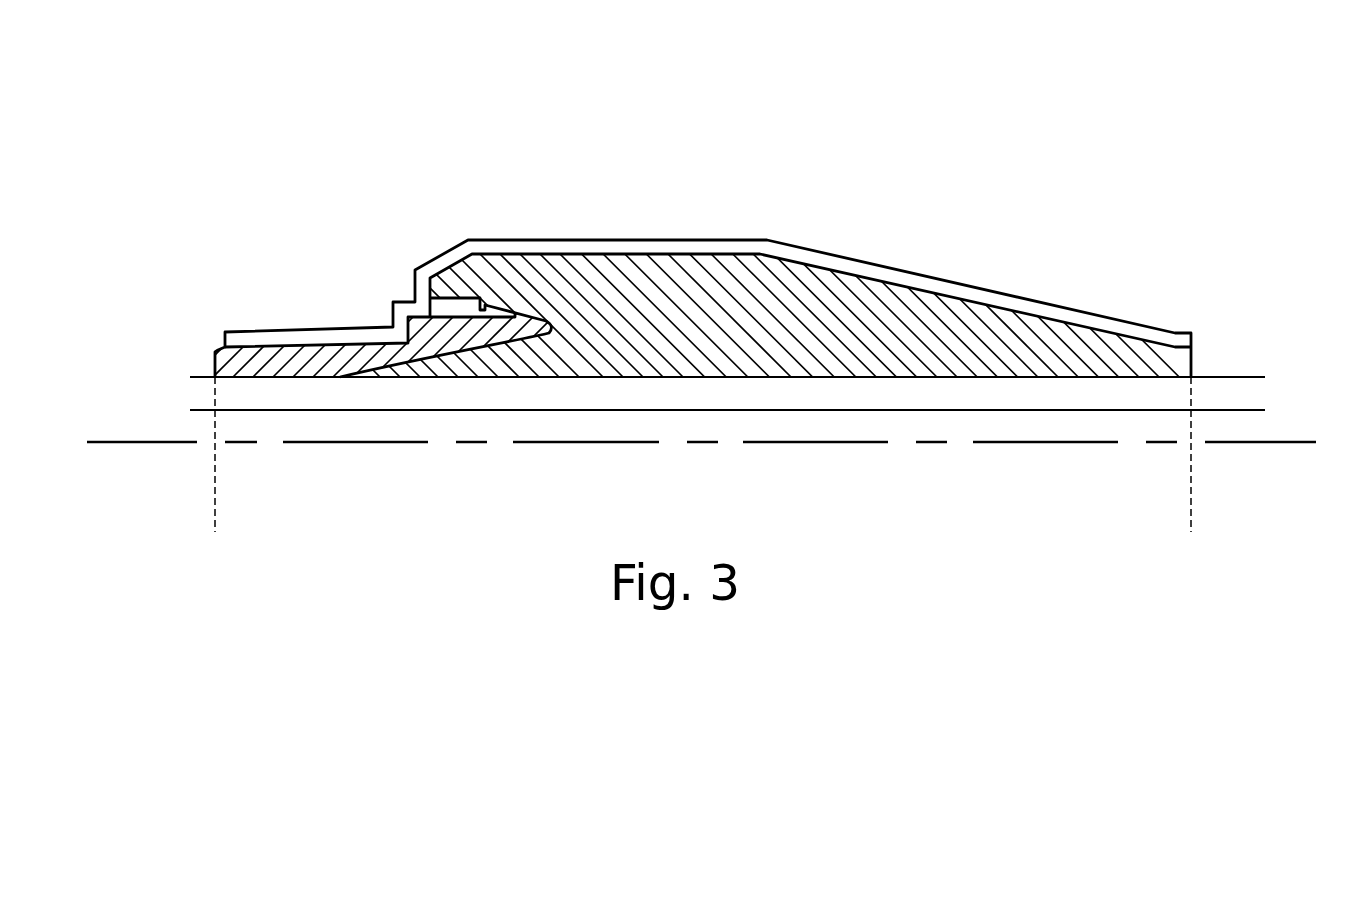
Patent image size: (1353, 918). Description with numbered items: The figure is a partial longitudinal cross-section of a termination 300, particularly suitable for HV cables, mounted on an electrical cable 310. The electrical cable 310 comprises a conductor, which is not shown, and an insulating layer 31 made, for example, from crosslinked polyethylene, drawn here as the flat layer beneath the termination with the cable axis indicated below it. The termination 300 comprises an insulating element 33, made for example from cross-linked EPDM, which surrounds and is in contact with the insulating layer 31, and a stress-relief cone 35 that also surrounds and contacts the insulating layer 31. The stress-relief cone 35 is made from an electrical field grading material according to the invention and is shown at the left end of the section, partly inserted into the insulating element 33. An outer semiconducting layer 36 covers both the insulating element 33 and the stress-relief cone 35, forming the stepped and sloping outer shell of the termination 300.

The termination 300 is at (626, 222).
The insulating layer 31 is at (365, 397).
The insulating element 33 is at (593, 303).
The stress-relief cone 35 is at (292, 363).
The outer semiconducting layer 36 is at (930, 282).
The electrical cable 310 is at (763, 442).